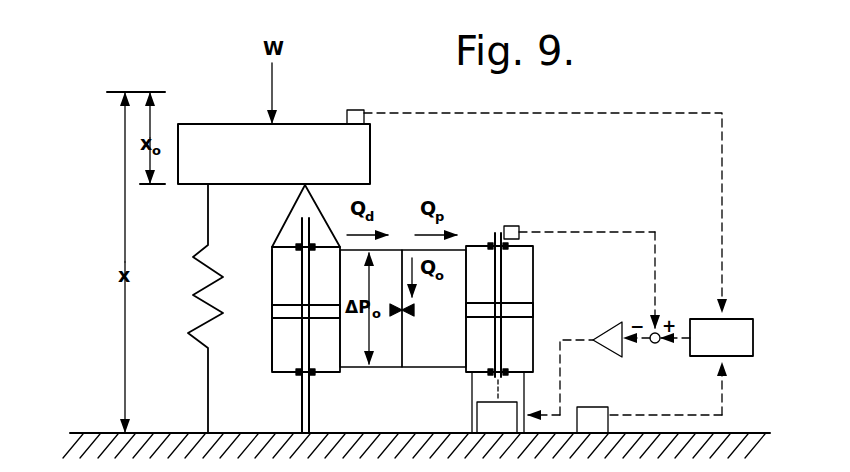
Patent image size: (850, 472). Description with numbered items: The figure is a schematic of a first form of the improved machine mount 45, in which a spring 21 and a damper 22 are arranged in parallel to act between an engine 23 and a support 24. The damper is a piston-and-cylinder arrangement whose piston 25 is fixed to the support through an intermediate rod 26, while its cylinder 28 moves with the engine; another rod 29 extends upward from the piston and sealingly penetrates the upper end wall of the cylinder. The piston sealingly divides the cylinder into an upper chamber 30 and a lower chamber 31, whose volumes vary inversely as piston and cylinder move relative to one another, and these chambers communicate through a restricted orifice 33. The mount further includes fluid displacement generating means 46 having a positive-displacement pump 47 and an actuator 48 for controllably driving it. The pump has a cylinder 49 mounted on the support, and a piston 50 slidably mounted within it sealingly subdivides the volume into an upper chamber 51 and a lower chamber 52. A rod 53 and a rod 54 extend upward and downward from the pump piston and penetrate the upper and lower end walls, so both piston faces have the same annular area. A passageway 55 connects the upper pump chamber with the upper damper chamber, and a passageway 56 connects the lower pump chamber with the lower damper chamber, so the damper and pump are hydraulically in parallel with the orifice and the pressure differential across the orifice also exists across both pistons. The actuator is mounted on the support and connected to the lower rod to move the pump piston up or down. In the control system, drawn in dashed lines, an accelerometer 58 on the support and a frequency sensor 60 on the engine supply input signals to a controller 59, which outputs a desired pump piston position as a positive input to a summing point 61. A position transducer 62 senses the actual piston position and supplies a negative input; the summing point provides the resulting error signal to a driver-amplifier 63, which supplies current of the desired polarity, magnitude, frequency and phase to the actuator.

The spring 21 is at (192, 295).
The damper 22 is at (267, 265).
The engine 23 is at (370, 146).
The support 24 is at (360, 433).
The piston 25 is at (272, 310).
The intermediate rod 26 is at (300, 400).
The cylinder 28 is at (272, 352).
The rod 29 is at (297, 230).
The upper chamber 30 is at (334, 280).
The lower chamber 31 is at (334, 349).
The restricted orifice 33 is at (413, 310).
The improved mount 45 is at (692, 95).
The fluid displacement generating means 46 is at (568, 215).
The positive-displacement pump 47 is at (537, 272).
The actuator 48 is at (472, 415).
The cylinder 49 is at (533, 318).
The piston 50 is at (462, 305).
The upper chamber 51 is at (524, 279).
The lower chamber 52 is at (524, 345).
The rod 53 is at (490, 284).
The rod 54 is at (490, 350).
The passageway 55 is at (395, 250).
The passageway 56 is at (423, 367).
The accelerometer 58 is at (605, 407).
The controller 59 is at (753, 337).
The frequency sensor 60 is at (355, 110).
The summing point 61 is at (655, 343).
The position transducer 62 is at (512, 225).
The driver-amplifier 63 is at (612, 345).